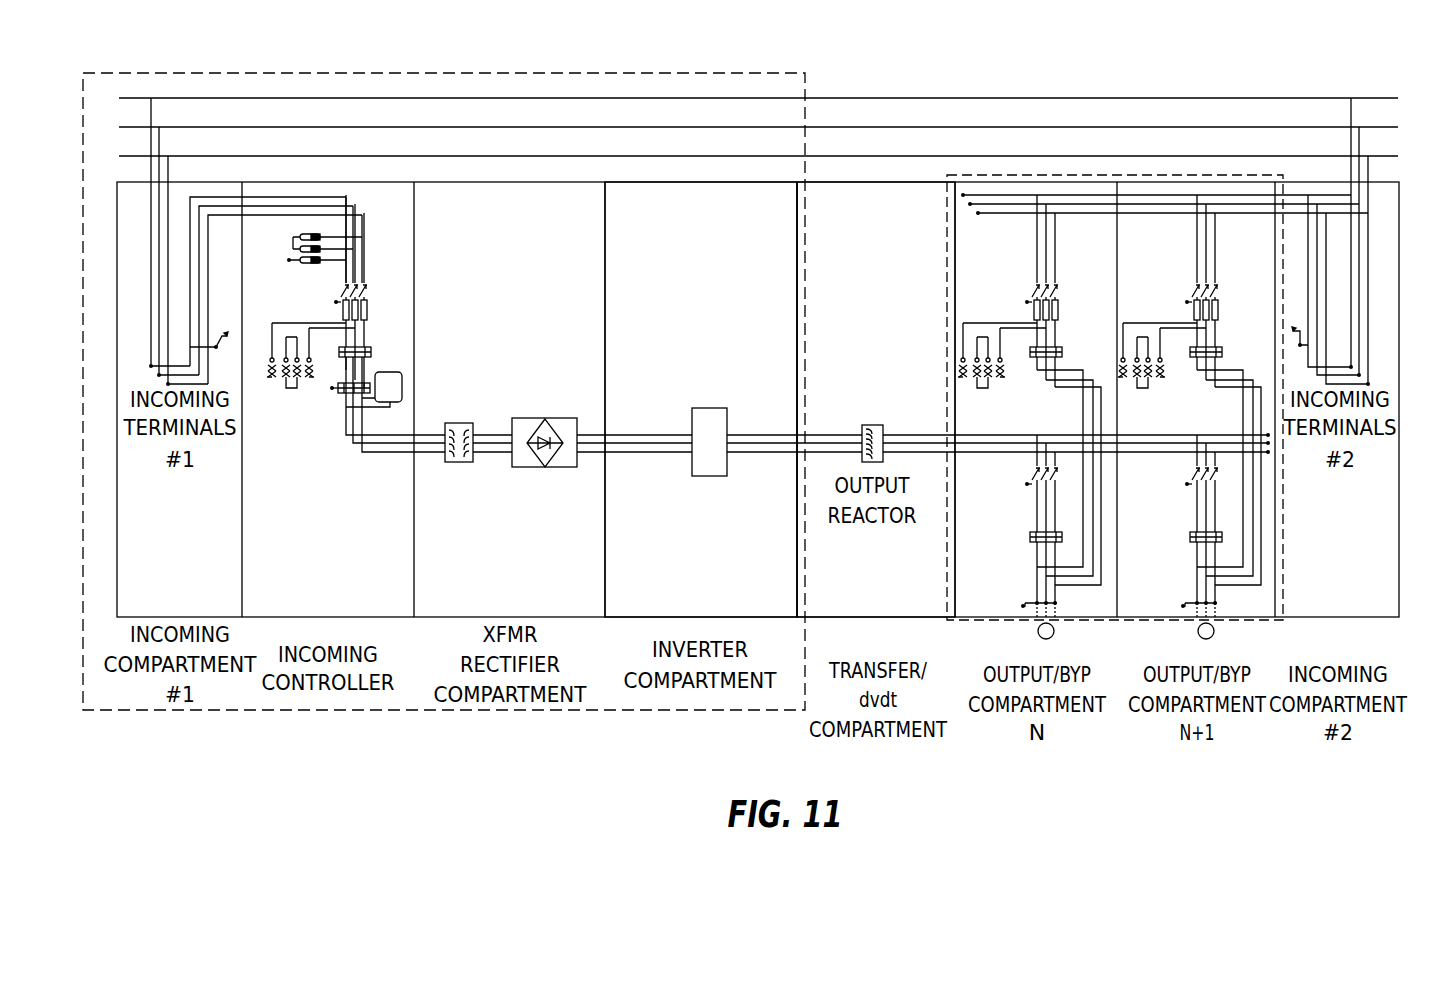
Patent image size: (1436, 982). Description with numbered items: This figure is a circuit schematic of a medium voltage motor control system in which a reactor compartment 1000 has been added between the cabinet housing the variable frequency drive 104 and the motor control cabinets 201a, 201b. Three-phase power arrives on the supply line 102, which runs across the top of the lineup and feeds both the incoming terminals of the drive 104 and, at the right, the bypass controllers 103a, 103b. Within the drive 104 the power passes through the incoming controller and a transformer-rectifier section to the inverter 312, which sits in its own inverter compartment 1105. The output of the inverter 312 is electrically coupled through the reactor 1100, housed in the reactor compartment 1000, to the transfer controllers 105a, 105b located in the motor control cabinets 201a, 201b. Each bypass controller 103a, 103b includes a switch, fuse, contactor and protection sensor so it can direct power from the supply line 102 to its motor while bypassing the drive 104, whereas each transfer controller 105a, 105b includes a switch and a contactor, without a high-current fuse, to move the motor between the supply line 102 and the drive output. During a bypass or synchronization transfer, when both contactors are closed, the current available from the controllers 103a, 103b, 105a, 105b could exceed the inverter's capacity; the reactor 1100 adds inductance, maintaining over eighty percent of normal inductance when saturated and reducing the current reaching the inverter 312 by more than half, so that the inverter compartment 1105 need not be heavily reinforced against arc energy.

The variable frequency drive 104 is at (727, 73).
The supply line 102 is at (1183, 98).
The inverter compartment 1105 is at (733, 228).
The inverter 312 is at (710, 408).
The reactor compartment 1000 is at (908, 228).
The reactor 1100 is at (872, 423).
The bypass controller 103b is at (963, 245).
The bypass controller 103a is at (1248, 185).
The motor control cabinet 201b is at (999, 178).
The motor control cabinet 201a is at (1165, 178).
The transfer controller 105b is at (960, 542).
The transfer controller 105a is at (1270, 543).